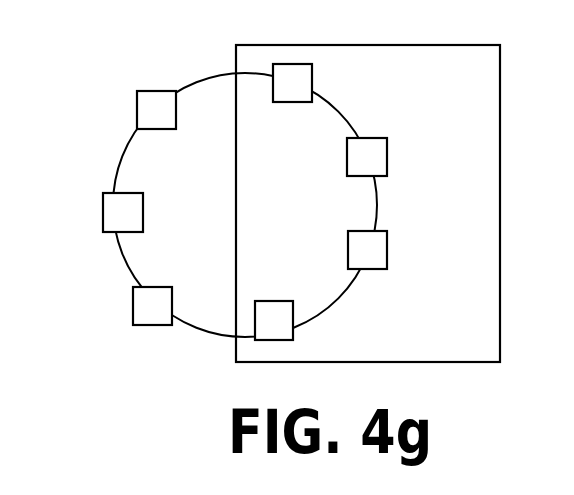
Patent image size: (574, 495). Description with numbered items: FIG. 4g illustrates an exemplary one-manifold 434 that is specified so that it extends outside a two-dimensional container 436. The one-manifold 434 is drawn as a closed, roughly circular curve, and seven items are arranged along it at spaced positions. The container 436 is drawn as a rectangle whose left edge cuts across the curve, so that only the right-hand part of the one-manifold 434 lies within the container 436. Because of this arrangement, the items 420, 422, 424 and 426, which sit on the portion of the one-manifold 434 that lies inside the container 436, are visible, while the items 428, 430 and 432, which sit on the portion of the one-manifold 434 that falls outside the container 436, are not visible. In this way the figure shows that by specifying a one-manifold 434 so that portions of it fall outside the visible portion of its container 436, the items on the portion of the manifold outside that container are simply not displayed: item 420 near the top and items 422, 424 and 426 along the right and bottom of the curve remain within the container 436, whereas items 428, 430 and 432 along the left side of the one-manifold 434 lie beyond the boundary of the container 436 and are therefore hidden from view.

The item 420 is at (312, 82).
The item 422 is at (387, 157).
The item 424 is at (387, 250).
The item 426 is at (293, 321).
The item 428 is at (137, 111).
The item 430 is at (103, 212).
The item 432 is at (133, 306).
The one-manifold 434 is at (377, 213).
The container 436 is at (482, 354).